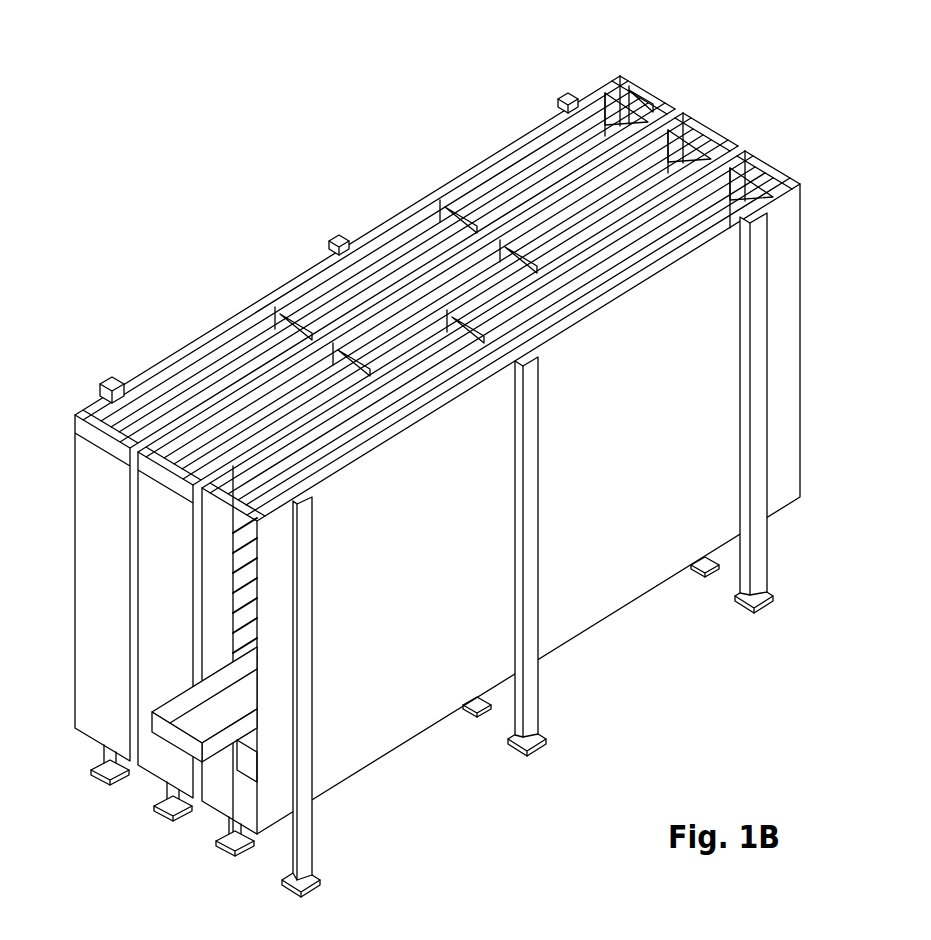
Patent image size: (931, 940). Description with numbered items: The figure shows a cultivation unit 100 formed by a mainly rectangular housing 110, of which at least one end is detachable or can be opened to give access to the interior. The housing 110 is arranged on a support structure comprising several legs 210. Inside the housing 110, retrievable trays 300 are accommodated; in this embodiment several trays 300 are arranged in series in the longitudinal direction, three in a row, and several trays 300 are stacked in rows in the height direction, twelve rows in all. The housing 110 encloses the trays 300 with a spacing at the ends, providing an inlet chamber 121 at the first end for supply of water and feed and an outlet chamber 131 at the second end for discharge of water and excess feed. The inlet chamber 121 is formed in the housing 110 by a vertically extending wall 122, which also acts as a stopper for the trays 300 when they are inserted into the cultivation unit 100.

The cultivation unit 100 is at (183, 324).
The housing 110 is at (610, 592).
The inlet chamber 121 is at (646, 92).
The vertically extending wall 122 is at (612, 80).
The outlet chamber 131 is at (100, 405).
The leg 210 is at (510, 744).
The retrievable tray 300 is at (327, 275).